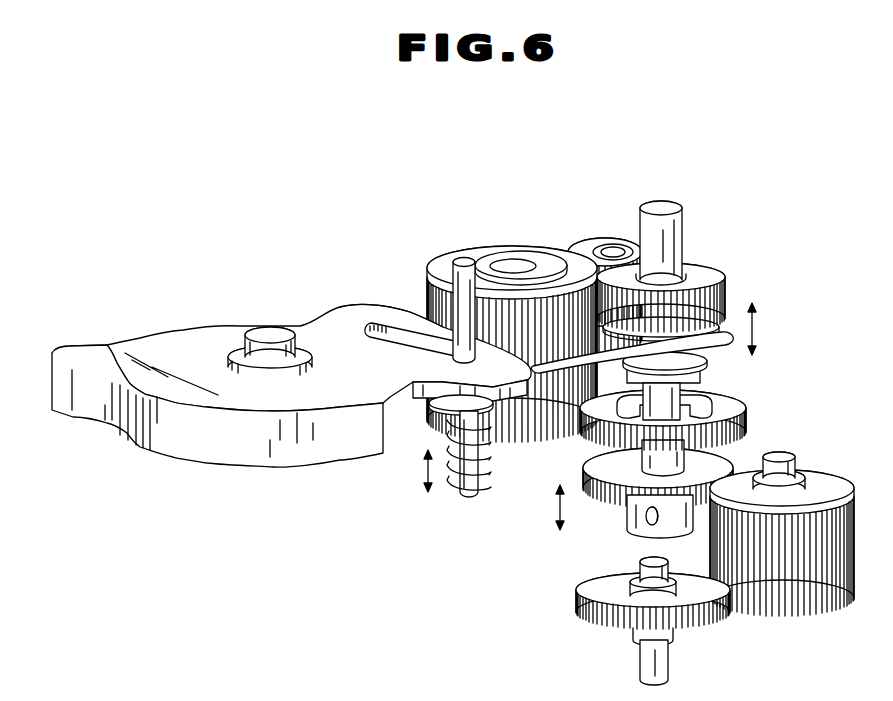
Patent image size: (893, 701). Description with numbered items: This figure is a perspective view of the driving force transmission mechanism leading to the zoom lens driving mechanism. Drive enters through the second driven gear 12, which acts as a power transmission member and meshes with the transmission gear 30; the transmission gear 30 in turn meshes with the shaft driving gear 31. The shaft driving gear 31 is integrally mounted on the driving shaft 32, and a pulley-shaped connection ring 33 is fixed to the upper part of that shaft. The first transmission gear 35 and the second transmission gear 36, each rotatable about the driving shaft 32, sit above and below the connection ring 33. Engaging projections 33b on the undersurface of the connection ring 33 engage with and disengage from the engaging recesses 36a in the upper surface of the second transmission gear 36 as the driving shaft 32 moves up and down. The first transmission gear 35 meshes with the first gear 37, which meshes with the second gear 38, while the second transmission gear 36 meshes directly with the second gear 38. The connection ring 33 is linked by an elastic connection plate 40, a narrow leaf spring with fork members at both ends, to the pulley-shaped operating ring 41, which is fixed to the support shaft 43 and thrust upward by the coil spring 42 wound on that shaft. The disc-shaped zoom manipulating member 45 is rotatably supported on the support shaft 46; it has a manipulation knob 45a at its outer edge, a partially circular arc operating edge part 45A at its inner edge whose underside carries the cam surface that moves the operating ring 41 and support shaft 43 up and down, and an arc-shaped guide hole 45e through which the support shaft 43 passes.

The second driven gear 12 is at (598, 627).
The transmission gear 30 is at (822, 612).
The shaft driving gear 31 is at (592, 500).
The driving shaft 32 is at (680, 225).
The connection ring 33 is at (730, 334).
The engaging projections 33b is at (690, 376).
The first transmission gear 35 is at (728, 280).
The second transmission gear 36 is at (745, 424).
The engaging recesses 36a is at (706, 404).
The first gear 37 is at (590, 240).
The second gear 38 is at (512, 307).
The elastic connection plate 40 is at (580, 286).
The operating ring 41 is at (437, 410).
The coil spring 42 is at (449, 480).
The support shaft 43 is at (470, 500).
The zoom manipulating member 45 is at (291, 388).
The manipulation knob 45a is at (100, 350).
The operating edge part 45A is at (372, 307).
The guide hole 45e is at (407, 333).
The support shaft 46 is at (268, 330).